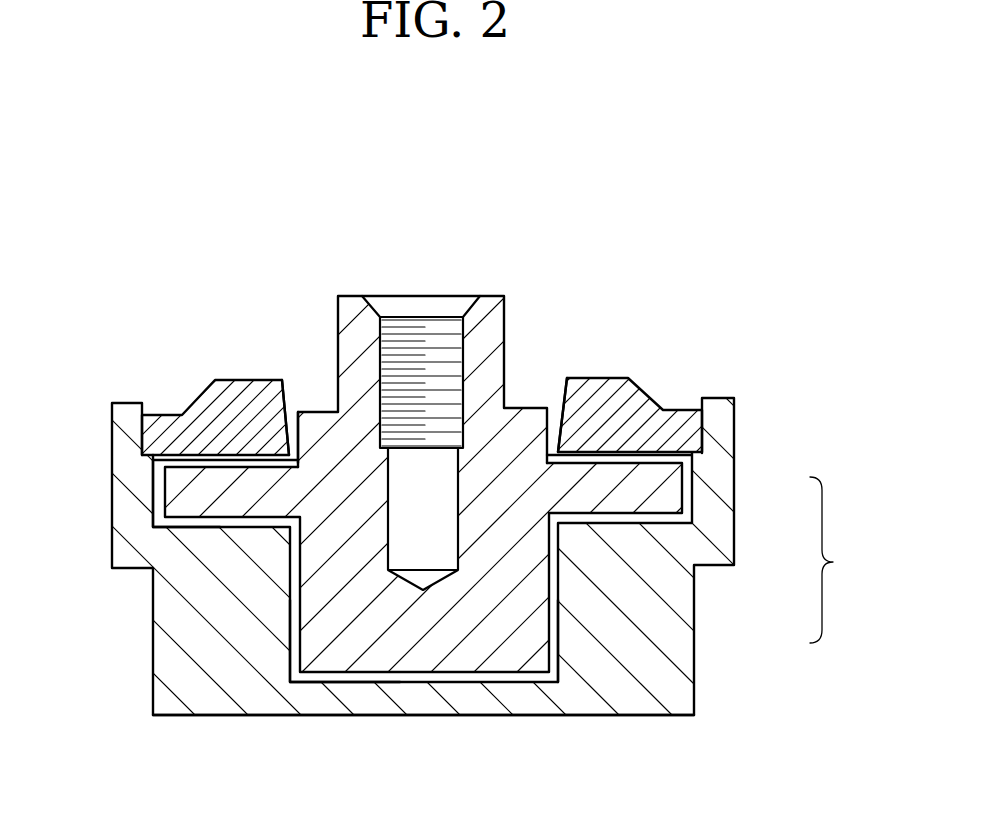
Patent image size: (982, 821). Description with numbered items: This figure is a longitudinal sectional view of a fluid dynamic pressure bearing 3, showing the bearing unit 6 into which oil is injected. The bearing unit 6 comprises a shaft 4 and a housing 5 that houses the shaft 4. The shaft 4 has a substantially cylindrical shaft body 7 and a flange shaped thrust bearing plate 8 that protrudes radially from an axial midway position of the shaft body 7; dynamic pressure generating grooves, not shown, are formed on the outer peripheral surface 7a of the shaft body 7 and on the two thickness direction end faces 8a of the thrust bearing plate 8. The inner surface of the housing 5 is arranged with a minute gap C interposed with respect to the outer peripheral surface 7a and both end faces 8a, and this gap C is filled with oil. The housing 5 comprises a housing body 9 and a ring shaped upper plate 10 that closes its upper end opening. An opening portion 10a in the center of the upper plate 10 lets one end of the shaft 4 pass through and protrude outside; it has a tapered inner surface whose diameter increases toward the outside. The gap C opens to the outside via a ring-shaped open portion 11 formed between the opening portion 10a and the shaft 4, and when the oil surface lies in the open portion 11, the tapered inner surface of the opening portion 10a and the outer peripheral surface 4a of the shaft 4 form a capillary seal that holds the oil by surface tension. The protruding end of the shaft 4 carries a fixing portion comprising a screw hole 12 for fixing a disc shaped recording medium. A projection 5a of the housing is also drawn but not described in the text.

The fluid dynamic pressure bearing 3 is at (757, 283).
The shaft 4 is at (530, 611).
The outer peripheral surface of shaft 4a is at (292, 432).
The housing 5 is at (740, 503).
The projection of housing 5a is at (245, 378).
The bearing unit 6 is at (835, 560).
The shaft body 7 is at (510, 427).
The outer peripheral surface of shaft body 7a is at (558, 656).
The thrust bearing plate 8 is at (676, 467).
The end faces of thrust bearing plate 8a is at (187, 461).
The housing body 9 is at (620, 697).
The upper plate 10 is at (643, 403).
The opening portion 10a is at (561, 406).
The open portion 11 is at (282, 378).
The screw hole 12 is at (458, 331).
The gap C is at (290, 650).